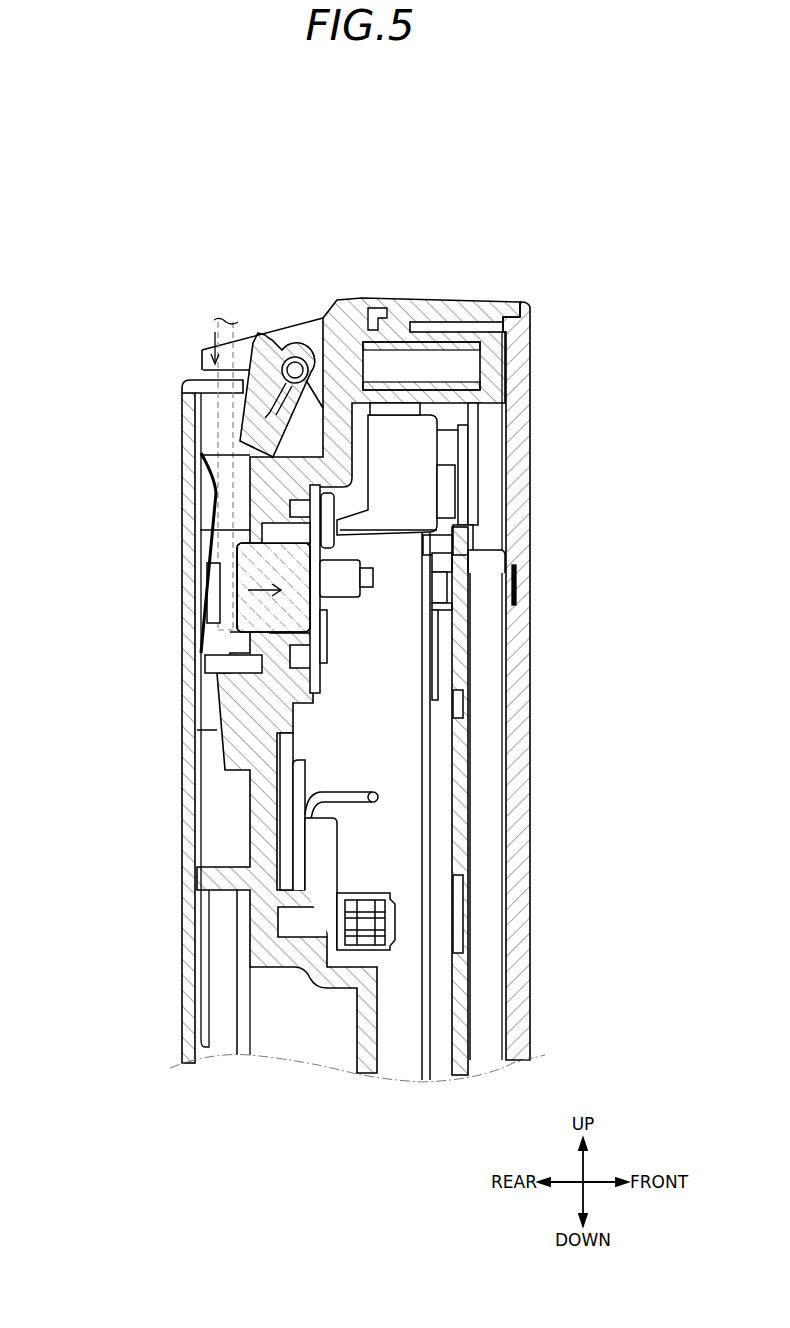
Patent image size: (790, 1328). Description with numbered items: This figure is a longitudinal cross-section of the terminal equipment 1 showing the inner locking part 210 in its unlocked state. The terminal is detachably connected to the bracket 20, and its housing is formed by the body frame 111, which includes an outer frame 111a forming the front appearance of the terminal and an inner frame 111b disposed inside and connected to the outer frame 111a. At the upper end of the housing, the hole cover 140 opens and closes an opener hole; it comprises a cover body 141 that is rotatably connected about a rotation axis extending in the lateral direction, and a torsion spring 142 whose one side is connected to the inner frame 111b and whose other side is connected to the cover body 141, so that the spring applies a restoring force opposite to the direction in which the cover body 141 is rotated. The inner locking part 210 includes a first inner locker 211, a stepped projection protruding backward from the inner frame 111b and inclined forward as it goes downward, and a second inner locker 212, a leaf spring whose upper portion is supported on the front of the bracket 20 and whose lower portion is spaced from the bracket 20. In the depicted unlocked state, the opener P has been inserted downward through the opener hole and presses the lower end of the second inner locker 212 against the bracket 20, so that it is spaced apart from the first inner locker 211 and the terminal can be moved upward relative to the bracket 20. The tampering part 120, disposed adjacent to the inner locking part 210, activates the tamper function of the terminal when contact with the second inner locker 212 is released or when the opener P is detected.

The terminal equipment 1 is at (367, 163).
The bracket 20 is at (192, 810).
The opener P is at (192, 380).
The body frame 111 is at (408, 243).
The outer frame 111a is at (523, 340).
The inner frame 111b is at (357, 307).
The tampering part 120 is at (283, 600).
The hole cover 140 is at (288, 272).
The cover body 141 is at (262, 338).
The torsion spring 142 is at (294, 357).
The inner locking part 210 is at (100, 640).
The first inner locker 211 is at (218, 666).
The second inner locker 212 is at (217, 503).